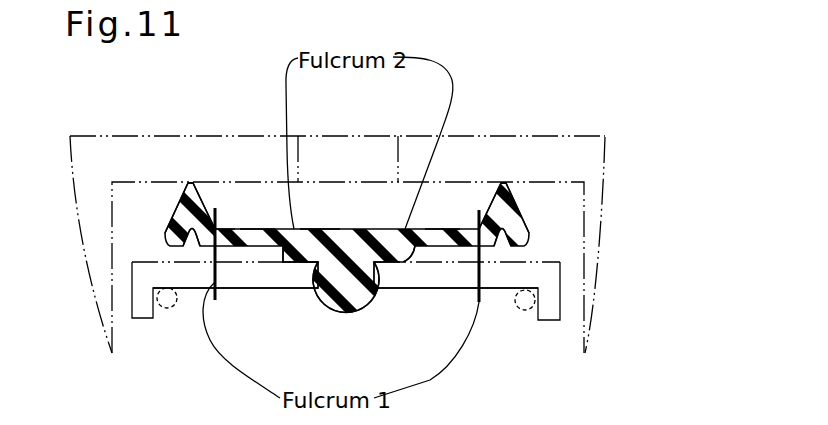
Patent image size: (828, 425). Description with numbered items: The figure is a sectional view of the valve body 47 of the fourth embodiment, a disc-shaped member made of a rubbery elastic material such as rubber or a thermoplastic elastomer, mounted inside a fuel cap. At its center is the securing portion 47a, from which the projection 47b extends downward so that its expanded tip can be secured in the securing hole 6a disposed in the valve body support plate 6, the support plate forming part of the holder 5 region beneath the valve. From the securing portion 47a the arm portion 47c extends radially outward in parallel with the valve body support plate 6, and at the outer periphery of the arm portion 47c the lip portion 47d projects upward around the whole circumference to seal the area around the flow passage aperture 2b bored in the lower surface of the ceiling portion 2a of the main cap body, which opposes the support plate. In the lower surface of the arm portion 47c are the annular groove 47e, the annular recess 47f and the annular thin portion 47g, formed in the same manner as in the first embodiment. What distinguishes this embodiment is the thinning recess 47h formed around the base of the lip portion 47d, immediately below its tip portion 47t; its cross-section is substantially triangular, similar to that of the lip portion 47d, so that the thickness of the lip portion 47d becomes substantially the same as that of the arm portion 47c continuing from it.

The ceiling portion 2a is at (480, 138).
The flow passage aperture 2b is at (364, 140).
The holder member 5 is at (521, 310).
The valve body support plate 6 is at (412, 290).
The securing hole 6a is at (346, 314).
The valve body 47 is at (389, 226).
The securing portion 47a is at (320, 229).
The projection 47b is at (312, 296).
The arm portion 47c is at (256, 231).
The lip portion 47d is at (176, 201).
The annular groove 47e is at (384, 232).
The annular recess 47f is at (222, 229).
The annular thin portion 47g is at (216, 287).
The thinning recess 47h is at (190, 236).
The tip portion 47t is at (190, 182).